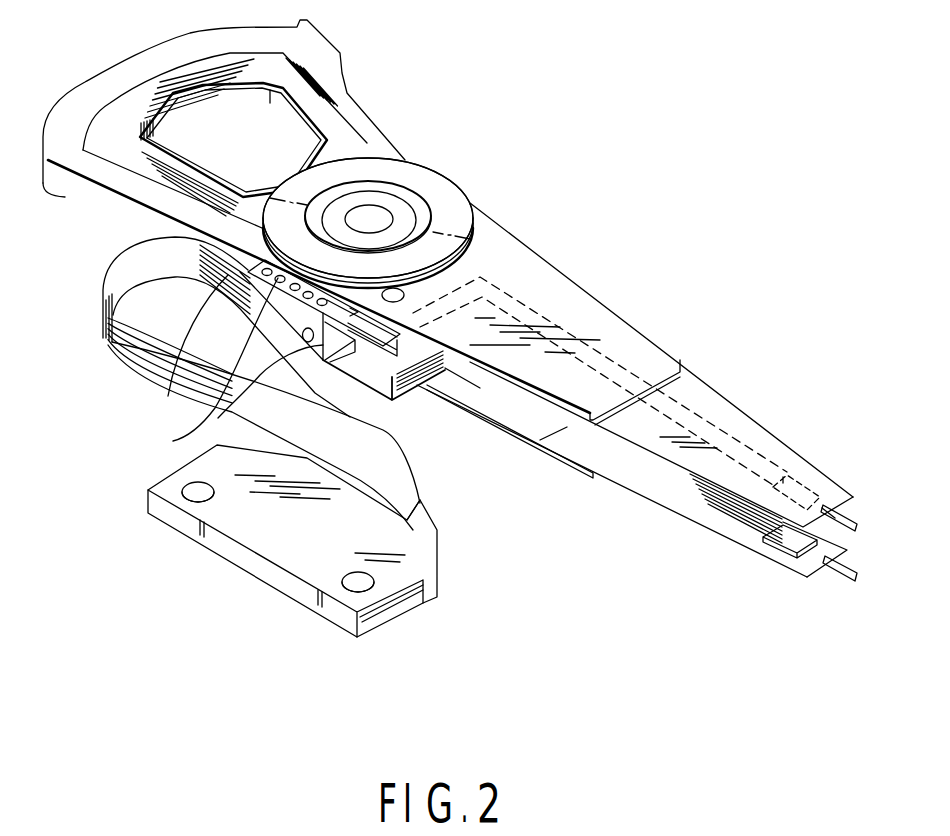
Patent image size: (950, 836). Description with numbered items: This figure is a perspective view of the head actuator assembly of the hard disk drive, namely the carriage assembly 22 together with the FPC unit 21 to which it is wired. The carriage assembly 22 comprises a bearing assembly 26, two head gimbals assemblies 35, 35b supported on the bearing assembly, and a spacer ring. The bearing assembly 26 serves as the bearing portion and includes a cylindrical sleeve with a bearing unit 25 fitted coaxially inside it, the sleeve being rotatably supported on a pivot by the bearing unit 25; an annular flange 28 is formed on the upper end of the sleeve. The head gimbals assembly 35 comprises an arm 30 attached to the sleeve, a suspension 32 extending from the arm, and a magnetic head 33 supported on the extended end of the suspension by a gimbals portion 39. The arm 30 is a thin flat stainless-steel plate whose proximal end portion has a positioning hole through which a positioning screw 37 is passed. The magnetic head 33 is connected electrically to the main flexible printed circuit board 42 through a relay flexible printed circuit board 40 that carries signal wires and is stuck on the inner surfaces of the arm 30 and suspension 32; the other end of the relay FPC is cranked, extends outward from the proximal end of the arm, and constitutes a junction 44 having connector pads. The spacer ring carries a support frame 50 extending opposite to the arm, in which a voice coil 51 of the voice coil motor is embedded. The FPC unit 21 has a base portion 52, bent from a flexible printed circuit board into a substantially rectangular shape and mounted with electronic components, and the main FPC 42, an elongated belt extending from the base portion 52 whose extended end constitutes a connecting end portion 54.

The FPC unit 21 is at (256, 546).
The carriage assembly 22 is at (640, 205).
The bearing unit 25 is at (408, 207).
The bearing assembly 26 is at (418, 146).
The annular flange 28 is at (452, 203).
The arm 30 is at (589, 297).
The suspension 32 is at (742, 410).
The magnetic head 33 is at (803, 478).
The head gimbals assembly 35 is at (657, 287).
The head gimbals assembly 35b is at (545, 480).
The positioning screw 37 is at (404, 293).
The gimbals portion 39 is at (833, 489).
The relay flexible printed circuit board 40 is at (647, 350).
The main flexible printed circuit board 42 is at (110, 337).
The junction 44 is at (264, 402).
The support frame 50 is at (63, 197).
The voice coil 51 is at (148, 90).
The base portion 52 is at (275, 550).
The connecting end portion 54 is at (153, 392).